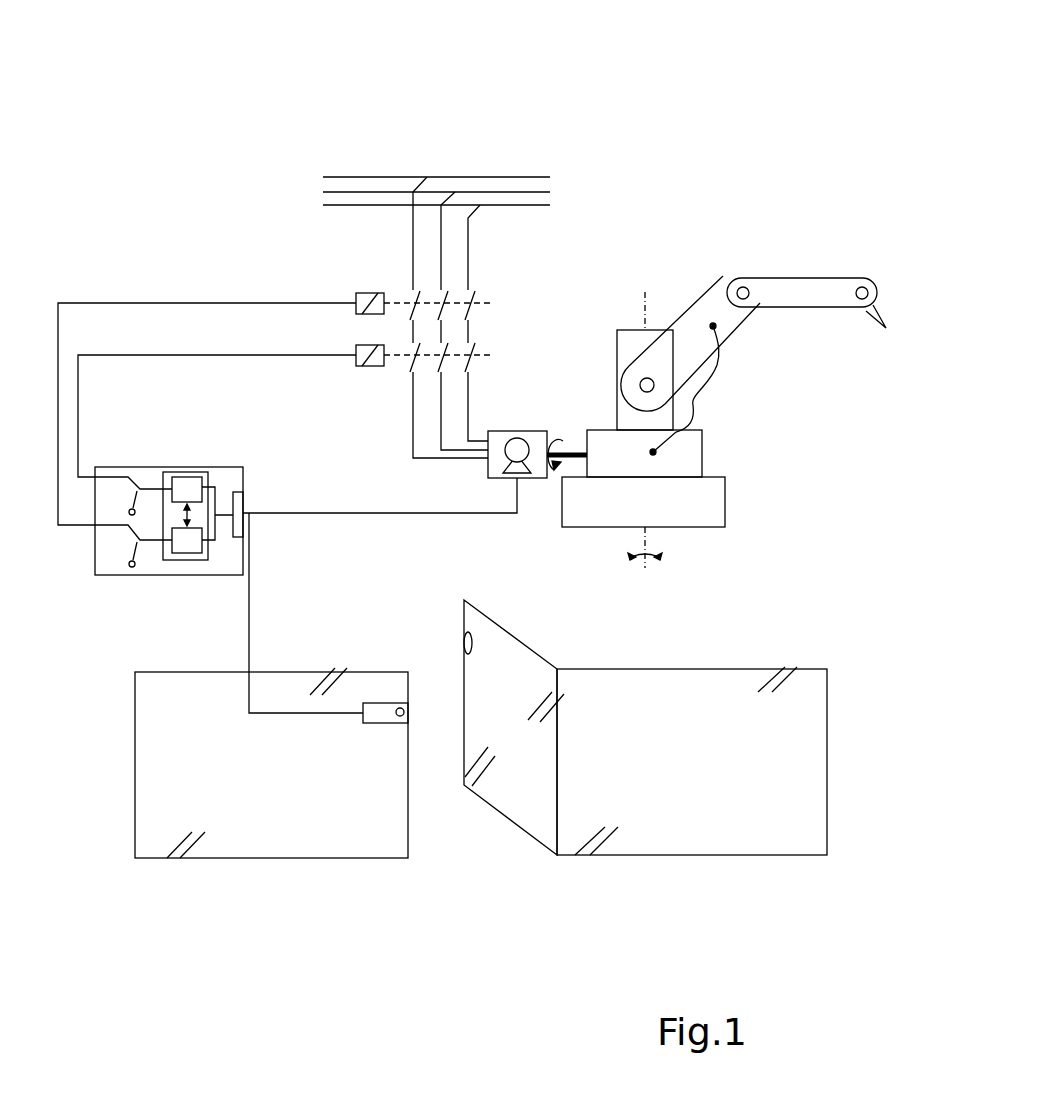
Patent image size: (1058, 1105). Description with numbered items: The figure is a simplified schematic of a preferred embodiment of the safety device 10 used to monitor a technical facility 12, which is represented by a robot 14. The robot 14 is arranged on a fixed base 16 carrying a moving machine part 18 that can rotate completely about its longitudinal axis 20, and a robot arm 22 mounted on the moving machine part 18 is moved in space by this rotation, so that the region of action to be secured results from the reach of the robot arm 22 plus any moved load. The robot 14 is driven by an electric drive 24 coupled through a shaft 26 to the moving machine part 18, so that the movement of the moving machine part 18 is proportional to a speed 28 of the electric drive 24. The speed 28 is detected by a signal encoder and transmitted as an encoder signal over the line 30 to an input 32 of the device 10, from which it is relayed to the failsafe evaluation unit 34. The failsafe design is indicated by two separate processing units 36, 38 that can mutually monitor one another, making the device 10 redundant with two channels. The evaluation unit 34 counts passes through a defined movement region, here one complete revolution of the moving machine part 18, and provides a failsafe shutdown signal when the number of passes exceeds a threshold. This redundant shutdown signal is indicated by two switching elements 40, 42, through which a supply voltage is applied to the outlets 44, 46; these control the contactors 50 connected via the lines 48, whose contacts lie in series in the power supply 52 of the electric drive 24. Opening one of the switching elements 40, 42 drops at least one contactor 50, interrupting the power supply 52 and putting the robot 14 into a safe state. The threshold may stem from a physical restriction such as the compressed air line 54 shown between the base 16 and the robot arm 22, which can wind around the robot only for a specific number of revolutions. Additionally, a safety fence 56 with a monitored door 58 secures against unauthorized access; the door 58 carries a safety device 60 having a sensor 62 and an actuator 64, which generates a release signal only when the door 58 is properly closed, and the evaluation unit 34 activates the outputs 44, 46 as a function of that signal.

The device 10 is at (88, 653).
The technical facility 12 is at (672, 160).
The robot 14 is at (815, 449).
The fixed base 16 is at (583, 500).
The moving machine part 18 is at (623, 412).
The longitudinal axis 20 is at (638, 312).
The robot arm 22 is at (790, 272).
The electric drive 24 is at (494, 466).
The shaft 26 is at (557, 444).
The speed 28 is at (560, 470).
The line 30 is at (316, 517).
The input 32 is at (243, 505).
The failsafe evaluation unit 34 is at (168, 472).
The processing unit 36 is at (190, 553).
The processing unit 38 is at (202, 482).
The switching element 40 is at (133, 548).
The switching element 42 is at (137, 485).
The outlet 44 is at (95, 545).
The outlet 46 is at (95, 477).
The lines 48 is at (163, 355).
The contactors 50 is at (357, 349).
The power supply 52 is at (437, 177).
The compressed air line 54 is at (717, 365).
The safety fence 56 is at (155, 785).
The monitored door 58 is at (527, 780).
The safety device 60 is at (375, 703).
The sensor 62 is at (405, 714).
The actuator 64 is at (466, 636).